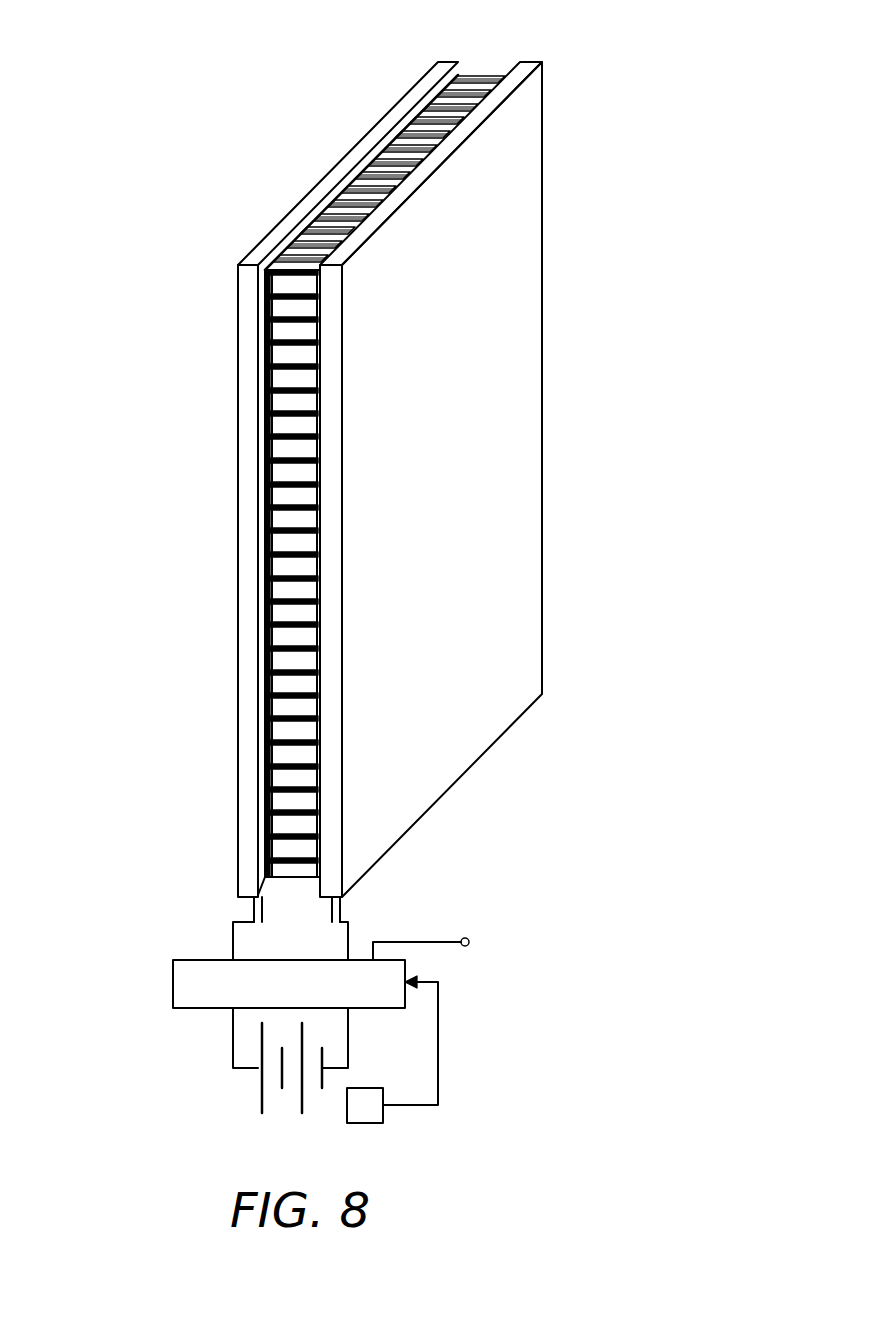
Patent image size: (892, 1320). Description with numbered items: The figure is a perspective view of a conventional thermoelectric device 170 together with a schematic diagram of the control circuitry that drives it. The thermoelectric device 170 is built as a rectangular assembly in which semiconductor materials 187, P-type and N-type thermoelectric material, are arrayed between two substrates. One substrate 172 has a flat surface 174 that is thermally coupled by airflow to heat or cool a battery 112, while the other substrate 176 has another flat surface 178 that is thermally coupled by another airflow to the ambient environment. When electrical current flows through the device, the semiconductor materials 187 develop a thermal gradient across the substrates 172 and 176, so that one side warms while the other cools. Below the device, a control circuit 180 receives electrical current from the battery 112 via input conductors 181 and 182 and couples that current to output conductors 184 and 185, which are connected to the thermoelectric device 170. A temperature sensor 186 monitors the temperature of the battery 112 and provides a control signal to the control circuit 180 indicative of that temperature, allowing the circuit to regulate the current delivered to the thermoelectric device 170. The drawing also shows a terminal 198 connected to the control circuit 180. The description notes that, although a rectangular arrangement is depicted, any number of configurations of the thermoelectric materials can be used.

The battery 112 is at (243, 1084).
The thermoelectric device 170 is at (395, 452).
The substrate 172 is at (542, 238).
The flat surface 174 is at (434, 323).
The substrate 176 is at (288, 225).
The flat surface 178 is at (230, 520).
The control circuit 180 is at (187, 960).
The input conductor 181 is at (233, 1053).
The input conductor 182 is at (348, 1032).
The output conductor 184 is at (232, 932).
The output conductor 185 is at (350, 930).
The temperature sensor 186 is at (373, 1118).
The semiconductor materials 187 is at (483, 76).
The terminal 198 is at (469, 945).